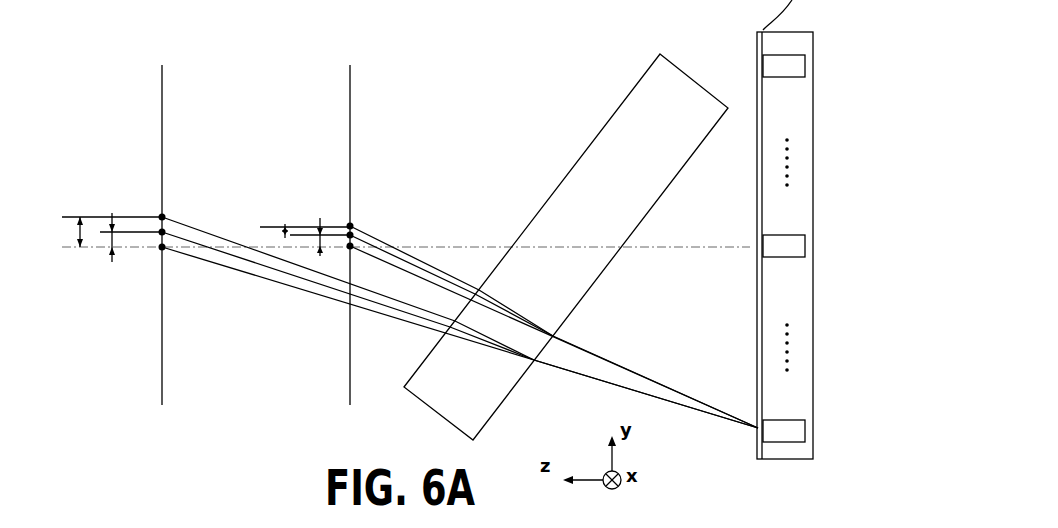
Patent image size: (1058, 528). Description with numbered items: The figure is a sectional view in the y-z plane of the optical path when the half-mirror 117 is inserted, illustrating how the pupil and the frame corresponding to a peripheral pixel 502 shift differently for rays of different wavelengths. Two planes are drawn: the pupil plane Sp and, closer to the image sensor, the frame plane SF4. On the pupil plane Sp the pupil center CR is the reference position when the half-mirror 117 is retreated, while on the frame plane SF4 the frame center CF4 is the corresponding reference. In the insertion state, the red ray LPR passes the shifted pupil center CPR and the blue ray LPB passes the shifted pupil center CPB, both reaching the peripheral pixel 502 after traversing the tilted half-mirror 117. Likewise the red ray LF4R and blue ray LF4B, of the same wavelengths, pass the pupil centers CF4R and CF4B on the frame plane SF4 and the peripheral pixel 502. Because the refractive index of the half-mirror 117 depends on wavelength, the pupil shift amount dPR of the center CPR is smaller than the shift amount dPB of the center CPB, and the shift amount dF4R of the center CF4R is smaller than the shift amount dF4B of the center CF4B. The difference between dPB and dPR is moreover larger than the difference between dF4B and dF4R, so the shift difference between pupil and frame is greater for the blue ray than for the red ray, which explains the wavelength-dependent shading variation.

The half-mirror 117 is at (632, 92).
The peripheral pixel 502 is at (808, 432).
The pupil plane Sp is at (164, 90).
The frame plane SF4 is at (352, 90).
The pupil center for blue ray CPB is at (160, 215).
The pupil center for red ray CPR is at (160, 230).
The pupil center CR is at (160, 249).
The pupil center on frame plane for blue ray CF4B is at (352, 226).
The pupil center on frame plane for red ray CF4R is at (354, 236).
The frame center CF4 is at (349, 250).
The blue ray through pupil center LPB is at (217, 236).
The red ray through pupil center LPR is at (243, 258).
The blue ray through frame plane LF4B is at (447, 262).
The red ray through frame plane LF4R is at (408, 280).
The pupil shift amount for blue ray dPB is at (53, 233).
The pupil shift amount for red ray dPR is at (89, 248).
The frame-plane shift amount for blue ray dF4B is at (261, 220).
The frame-plane shift amount for red ray dF4R is at (303, 224).